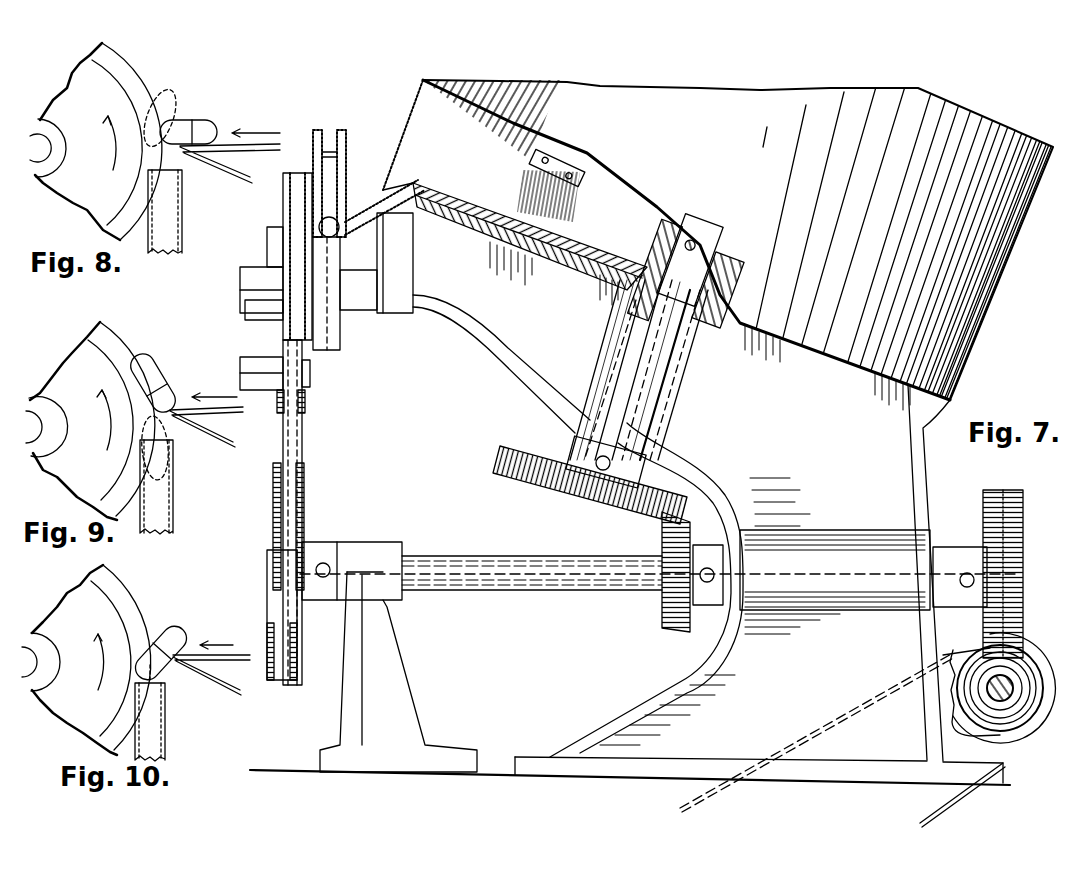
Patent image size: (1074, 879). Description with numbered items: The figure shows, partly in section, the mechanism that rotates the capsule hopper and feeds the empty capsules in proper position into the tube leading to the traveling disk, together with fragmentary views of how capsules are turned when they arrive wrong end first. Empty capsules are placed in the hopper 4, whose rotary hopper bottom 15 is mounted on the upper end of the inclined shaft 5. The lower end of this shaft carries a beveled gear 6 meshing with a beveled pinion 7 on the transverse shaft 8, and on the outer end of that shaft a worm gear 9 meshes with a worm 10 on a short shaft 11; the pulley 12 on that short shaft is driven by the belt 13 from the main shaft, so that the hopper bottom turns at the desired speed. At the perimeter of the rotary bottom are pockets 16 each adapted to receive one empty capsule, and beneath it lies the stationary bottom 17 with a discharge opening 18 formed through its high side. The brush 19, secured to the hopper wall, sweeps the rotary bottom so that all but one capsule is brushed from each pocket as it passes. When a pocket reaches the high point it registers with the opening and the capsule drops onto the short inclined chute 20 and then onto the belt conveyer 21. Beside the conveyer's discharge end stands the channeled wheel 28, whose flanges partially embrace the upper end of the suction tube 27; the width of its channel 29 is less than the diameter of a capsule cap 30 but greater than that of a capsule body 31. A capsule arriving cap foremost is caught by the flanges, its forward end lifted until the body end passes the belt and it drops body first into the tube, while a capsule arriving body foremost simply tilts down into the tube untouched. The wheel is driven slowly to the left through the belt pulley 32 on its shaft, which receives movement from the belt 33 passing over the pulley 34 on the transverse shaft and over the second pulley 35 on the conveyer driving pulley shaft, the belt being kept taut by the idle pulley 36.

In FIG. 7, the hopper 4 is at (1018, 183).
In FIG. 7, the inclined shaft 5 is at (637, 297).
In FIG. 7, the beveled gear 6 is at (502, 458).
In FIG. 7, the beveled pinion 7 is at (670, 622).
In FIG. 7, the transverse shaft 8 is at (530, 580).
In FIG. 7, the worm gear 9 is at (1006, 490).
In FIG. 7, the worm 10 is at (1010, 665).
In FIG. 7, the short shaft 11 is at (1006, 700).
In FIG. 7, the pulley 12 is at (982, 724).
In FIG. 7, the belt 13 is at (940, 807).
In FIG. 7, the hopper bottom 15 is at (604, 250).
In FIG. 7, the pockets 16 is at (399, 184).
In FIG. 7, the stationary bottom 17 is at (556, 250).
In FIG. 7, the discharge opening 18 is at (420, 190).
In FIG. 7, the brush 19 is at (530, 176).
In FIG. 7, the inclined chute 20 is at (363, 202).
In FIG. 7, the belt conveyer 21 is at (333, 326).
In FIG. 8, the belt conveyer 21 is at (230, 171).
In FIG. 9, the belt conveyer 21 is at (223, 444).
In FIG. 10, the belt conveyer 21 is at (231, 654).
In FIG. 8, the suction tube 27 is at (182, 226).
In FIG. 9, the suction tube 27 is at (173, 510).
In FIG. 10, the suction tube 27 is at (165, 728).
In FIG. 7, the channeled wheel 28 is at (343, 130).
In FIG. 8, the channeled wheel 28 is at (80, 197).
In FIG. 9, the channeled wheel 28 is at (72, 361).
In FIG. 10, the channeled wheel 28 is at (68, 603).
In FIG. 7, the channel 29 is at (327, 137).
In FIG. 8, the channel 29 is at (120, 64).
In FIG. 9, the channel 29 is at (118, 343).
In FIG. 10, the channel 29 is at (127, 601).
In FIG. 8, the cap 30 is at (195, 122).
In FIG. 9, the cap 30 is at (147, 356).
In FIG. 10, the cap 30 is at (171, 632).
In FIG. 9, the body 31 is at (167, 393).
In FIG. 10, the body 31 is at (162, 668).
In FIG. 7, the belt pulley 32 is at (283, 211).
In FIG. 7, the belt 33 is at (298, 450).
In FIG. 7, the pulley 34 is at (280, 531).
In FIG. 7, the second pulley 35 is at (280, 313).
In FIG. 7, the idle pulley 36 is at (305, 410).